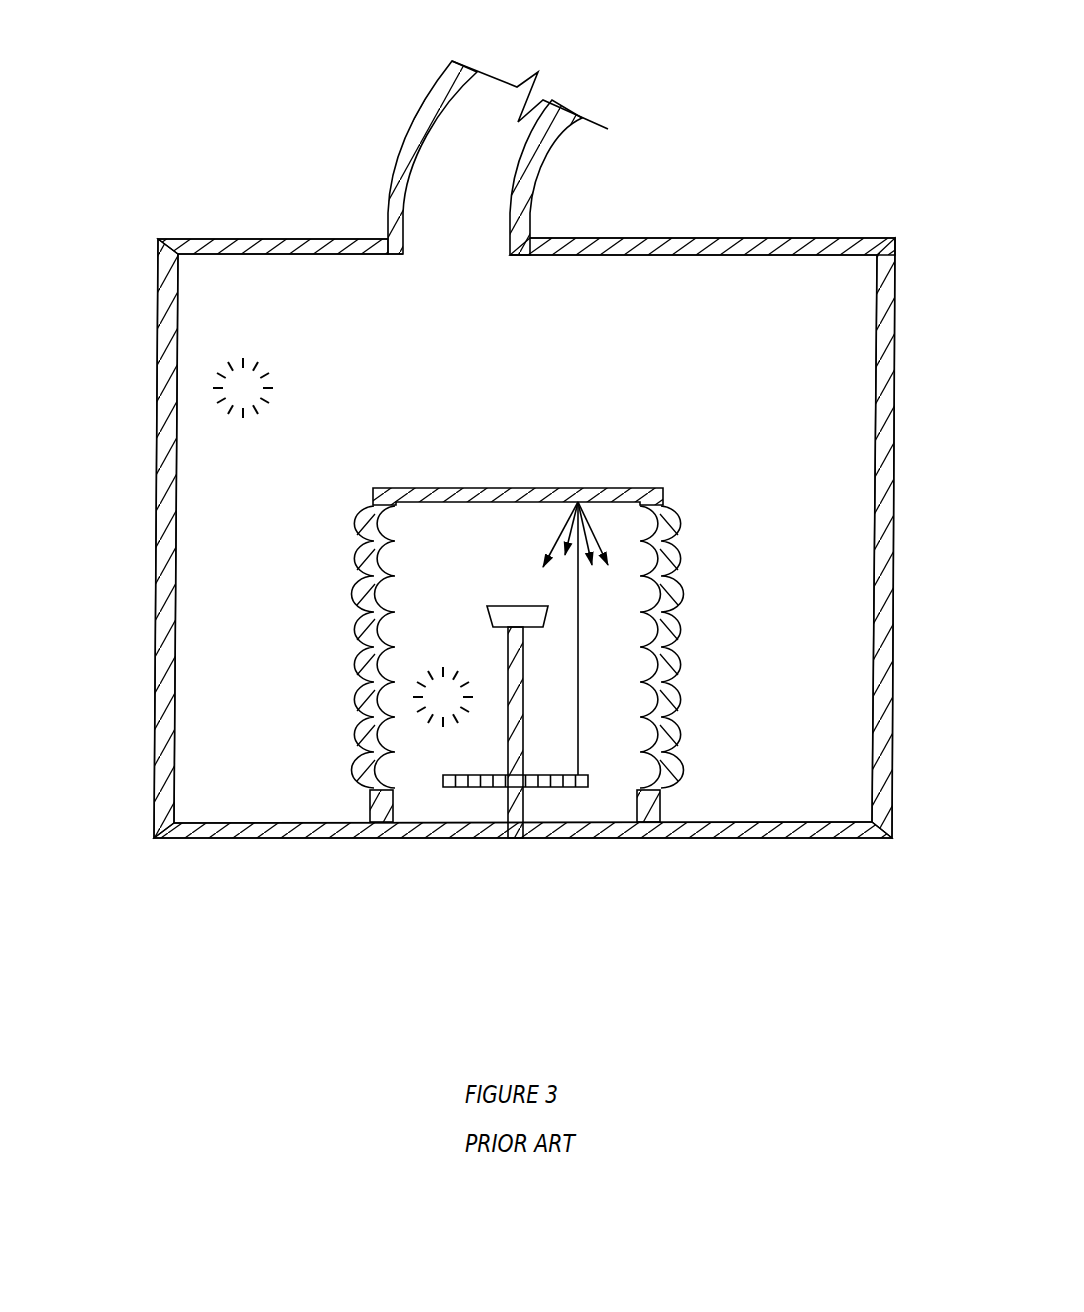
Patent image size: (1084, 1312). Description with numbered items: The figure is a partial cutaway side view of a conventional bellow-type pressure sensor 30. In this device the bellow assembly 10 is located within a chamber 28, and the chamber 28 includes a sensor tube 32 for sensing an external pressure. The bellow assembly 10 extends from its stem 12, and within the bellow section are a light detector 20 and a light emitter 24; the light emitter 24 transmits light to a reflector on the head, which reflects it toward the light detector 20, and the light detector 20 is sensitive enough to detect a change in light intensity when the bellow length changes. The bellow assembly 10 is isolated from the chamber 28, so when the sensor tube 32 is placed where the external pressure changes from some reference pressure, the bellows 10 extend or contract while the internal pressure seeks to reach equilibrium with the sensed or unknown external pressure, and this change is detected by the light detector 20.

The bellow-type pressure sensor 30 is at (637, 168).
The sensor tube 32 is at (408, 152).
The bellow assembly 10 is at (685, 563).
The light detector 20 is at (488, 610).
The light emitter 24 is at (458, 774).
The stem 12 is at (697, 826).
The chamber 28 is at (835, 753).